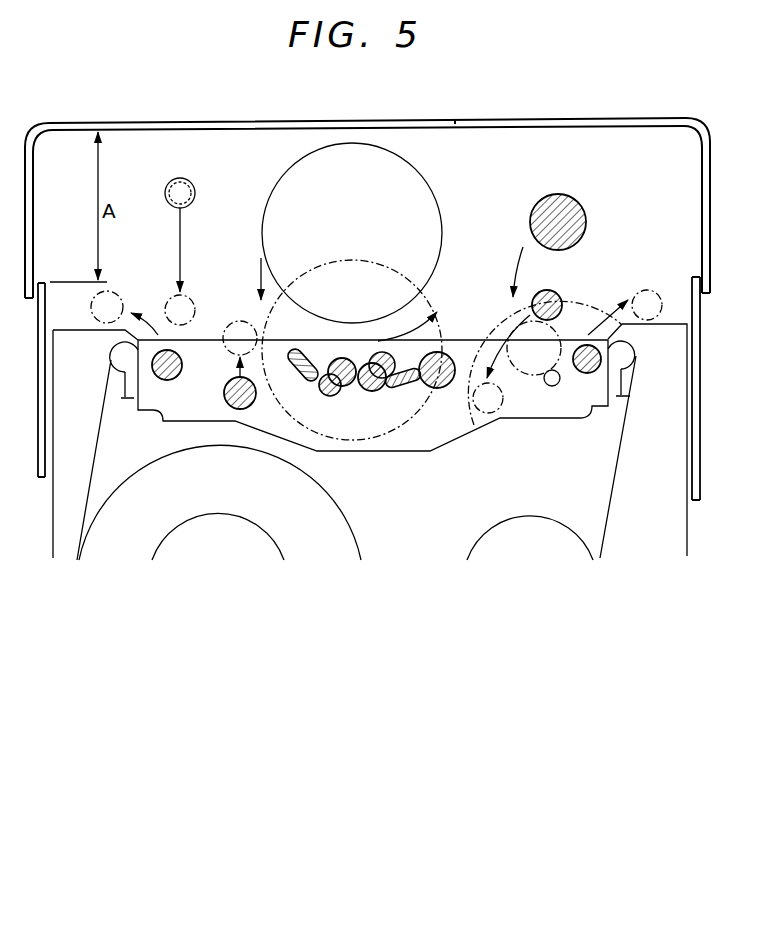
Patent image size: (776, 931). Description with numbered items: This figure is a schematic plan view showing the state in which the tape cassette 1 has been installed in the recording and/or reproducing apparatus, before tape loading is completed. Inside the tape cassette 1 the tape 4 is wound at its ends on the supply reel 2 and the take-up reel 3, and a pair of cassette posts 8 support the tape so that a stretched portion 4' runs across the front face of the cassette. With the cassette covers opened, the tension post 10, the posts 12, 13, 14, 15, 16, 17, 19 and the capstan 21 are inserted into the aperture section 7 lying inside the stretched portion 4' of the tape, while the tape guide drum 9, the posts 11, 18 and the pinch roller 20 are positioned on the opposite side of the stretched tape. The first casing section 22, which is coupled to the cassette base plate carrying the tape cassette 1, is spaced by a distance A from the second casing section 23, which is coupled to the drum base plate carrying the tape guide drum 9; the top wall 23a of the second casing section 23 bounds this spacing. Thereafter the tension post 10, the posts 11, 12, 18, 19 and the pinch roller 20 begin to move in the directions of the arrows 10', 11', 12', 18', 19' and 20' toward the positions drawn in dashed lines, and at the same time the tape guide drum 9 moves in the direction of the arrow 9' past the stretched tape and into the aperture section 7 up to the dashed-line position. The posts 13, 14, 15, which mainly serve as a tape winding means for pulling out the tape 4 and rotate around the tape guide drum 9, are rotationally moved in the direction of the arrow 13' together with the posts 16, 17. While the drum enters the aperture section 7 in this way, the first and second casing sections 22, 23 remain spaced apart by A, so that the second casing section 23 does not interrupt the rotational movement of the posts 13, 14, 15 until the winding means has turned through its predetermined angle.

The tape cassette 1 is at (689, 530).
The supply reel 2 is at (164, 540).
The take-up reel 3 is at (562, 522).
The tape 4 is at (344, 442).
The stretched portion of the tape 4' is at (545, 362).
The aperture section 7 is at (165, 382).
The cassette posts 8 is at (110, 354).
The tape guide drum 9 is at (347, 231).
The arrow 9' is at (239, 306).
The tension post 10 is at (370, 400).
The arrow 10' is at (125, 303).
The post 11 is at (177, 172).
The arrow 11' is at (201, 266).
The post 12 is at (222, 399).
The arrow 12' is at (214, 368).
The post 13 is at (438, 392).
The arrow 13' is at (365, 350).
The post 14 is at (404, 386).
The post 15 is at (373, 392).
The post 16 is at (342, 388).
The post 17 is at (306, 384).
The post 18 is at (572, 297).
The arrow 18' is at (507, 364).
The post 19 is at (620, 378).
The arrow 19' is at (638, 321).
The pinch roller 20 is at (585, 222).
The arrow 20' is at (545, 311).
The capstan 21 is at (560, 386).
The first casing section 22 is at (703, 450).
The second casing section 23 is at (711, 150).
The cover top wall 23a is at (453, 119).